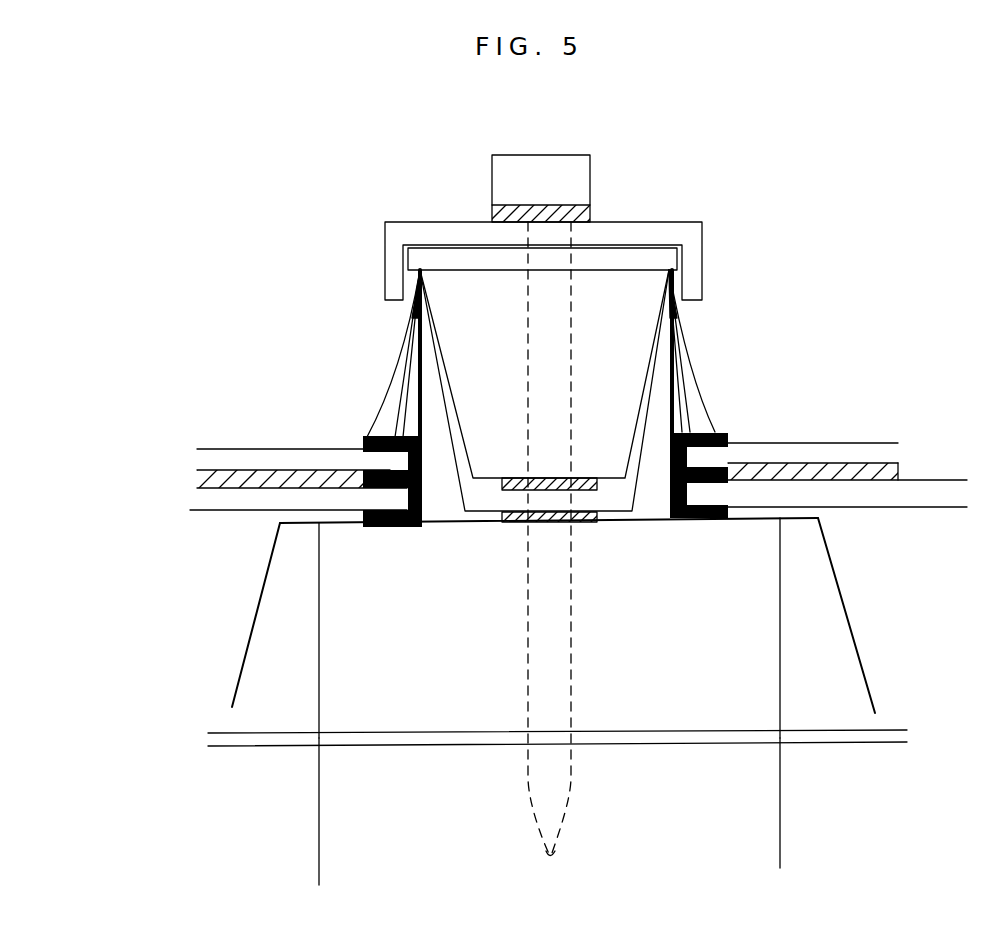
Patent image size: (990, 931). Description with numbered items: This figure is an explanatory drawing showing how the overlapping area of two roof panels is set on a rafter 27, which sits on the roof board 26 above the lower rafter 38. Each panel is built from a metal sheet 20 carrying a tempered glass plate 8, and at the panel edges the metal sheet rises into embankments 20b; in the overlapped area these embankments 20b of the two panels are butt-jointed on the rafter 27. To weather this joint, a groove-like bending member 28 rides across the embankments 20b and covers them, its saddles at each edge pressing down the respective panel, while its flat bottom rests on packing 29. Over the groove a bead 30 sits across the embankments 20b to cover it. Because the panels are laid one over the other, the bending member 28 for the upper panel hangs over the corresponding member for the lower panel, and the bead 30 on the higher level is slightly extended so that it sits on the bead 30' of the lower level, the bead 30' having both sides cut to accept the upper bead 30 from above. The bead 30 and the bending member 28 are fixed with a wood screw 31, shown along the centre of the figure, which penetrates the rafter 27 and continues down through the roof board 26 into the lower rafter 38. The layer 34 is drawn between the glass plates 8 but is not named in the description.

The tempered glass plate 8 is at (223, 495).
The metal sheet 20 is at (245, 650).
The embankment 20b is at (407, 397).
The roof board 26 is at (852, 733).
The rafter 27 is at (760, 682).
The groove-like bending member 28 is at (452, 387).
The packing 29 is at (502, 488).
The bead 30 is at (546, 222).
The bead on the lower level 30' is at (542, 288).
The wood screw 31 is at (572, 593).
The layer 34 is at (313, 480).
The lower rafter 38 is at (773, 818).